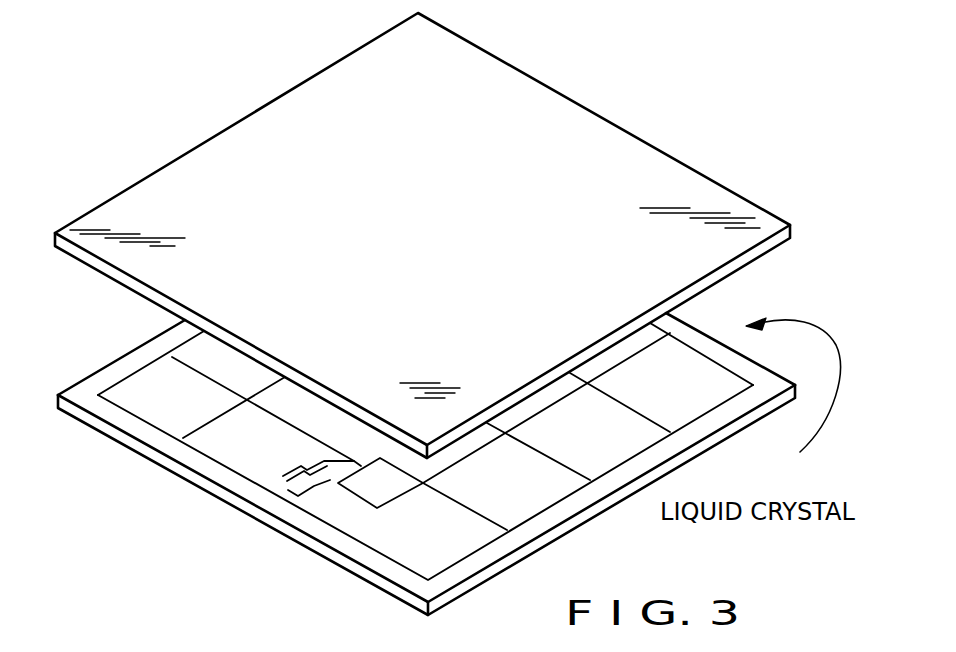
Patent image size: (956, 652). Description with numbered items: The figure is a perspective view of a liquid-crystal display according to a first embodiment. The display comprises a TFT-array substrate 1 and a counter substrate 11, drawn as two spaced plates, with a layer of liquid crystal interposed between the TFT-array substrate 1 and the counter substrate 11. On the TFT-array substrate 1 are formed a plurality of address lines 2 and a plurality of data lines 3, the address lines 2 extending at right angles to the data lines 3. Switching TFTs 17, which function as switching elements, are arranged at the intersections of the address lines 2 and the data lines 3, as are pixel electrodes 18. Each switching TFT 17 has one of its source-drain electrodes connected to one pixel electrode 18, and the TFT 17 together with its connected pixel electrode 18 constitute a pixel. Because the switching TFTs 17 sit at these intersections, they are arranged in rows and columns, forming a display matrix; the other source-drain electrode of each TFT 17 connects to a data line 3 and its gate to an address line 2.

The TFT-array substrate 1 is at (323, 548).
The address line 2 is at (213, 428).
The data line 3 is at (287, 407).
The counter substrate 11 is at (99, 268).
The switching TFT 17 is at (303, 488).
The pixel electrode 18 is at (372, 493).